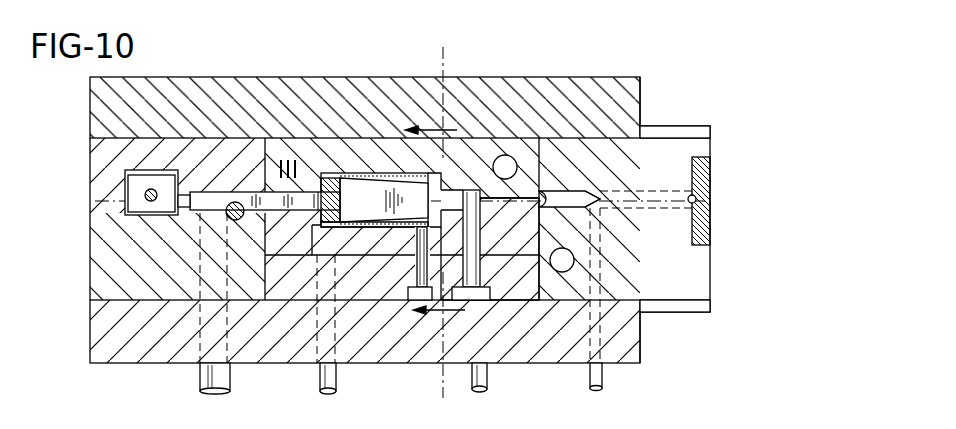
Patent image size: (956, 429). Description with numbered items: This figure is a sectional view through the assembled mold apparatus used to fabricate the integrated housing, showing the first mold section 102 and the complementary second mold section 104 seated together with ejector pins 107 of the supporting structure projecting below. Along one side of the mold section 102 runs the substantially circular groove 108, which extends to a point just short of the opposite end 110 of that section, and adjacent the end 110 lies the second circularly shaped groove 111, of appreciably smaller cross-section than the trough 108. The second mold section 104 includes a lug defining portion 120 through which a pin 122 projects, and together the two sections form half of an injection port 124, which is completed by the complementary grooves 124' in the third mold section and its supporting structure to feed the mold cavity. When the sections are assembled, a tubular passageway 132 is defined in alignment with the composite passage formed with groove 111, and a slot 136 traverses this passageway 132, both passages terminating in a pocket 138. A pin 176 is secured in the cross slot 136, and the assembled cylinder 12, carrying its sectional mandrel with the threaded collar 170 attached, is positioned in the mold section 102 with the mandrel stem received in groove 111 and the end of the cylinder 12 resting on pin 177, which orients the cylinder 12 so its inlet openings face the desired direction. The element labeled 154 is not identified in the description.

The cylinder 12 is at (388, 180).
The first mold section 102 is at (348, 256).
The second mold section 104 is at (485, 238).
The ejector pins 107 is at (323, 393).
The circular groove 108 is at (378, 228).
The opposite end of mold section 110 is at (317, 247).
The second circularly shaped groove 111 is at (316, 190).
The lug defining portion 120 is at (478, 192).
The pin 122 is at (473, 275).
The injection port 124 is at (612, 124).
The complementary grooves 124' is at (644, 142).
The tubular passageway 132 is at (187, 192).
The slot 136 is at (230, 216).
The pocket 138 is at (138, 173).
The slide block 154 is at (133, 192).
The threaded collar 170 is at (330, 173).
The pin 176 is at (234, 203).
The pin 177 is at (418, 228).